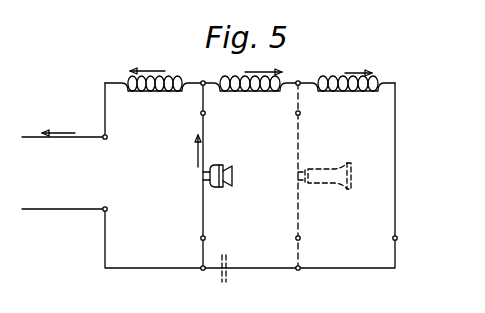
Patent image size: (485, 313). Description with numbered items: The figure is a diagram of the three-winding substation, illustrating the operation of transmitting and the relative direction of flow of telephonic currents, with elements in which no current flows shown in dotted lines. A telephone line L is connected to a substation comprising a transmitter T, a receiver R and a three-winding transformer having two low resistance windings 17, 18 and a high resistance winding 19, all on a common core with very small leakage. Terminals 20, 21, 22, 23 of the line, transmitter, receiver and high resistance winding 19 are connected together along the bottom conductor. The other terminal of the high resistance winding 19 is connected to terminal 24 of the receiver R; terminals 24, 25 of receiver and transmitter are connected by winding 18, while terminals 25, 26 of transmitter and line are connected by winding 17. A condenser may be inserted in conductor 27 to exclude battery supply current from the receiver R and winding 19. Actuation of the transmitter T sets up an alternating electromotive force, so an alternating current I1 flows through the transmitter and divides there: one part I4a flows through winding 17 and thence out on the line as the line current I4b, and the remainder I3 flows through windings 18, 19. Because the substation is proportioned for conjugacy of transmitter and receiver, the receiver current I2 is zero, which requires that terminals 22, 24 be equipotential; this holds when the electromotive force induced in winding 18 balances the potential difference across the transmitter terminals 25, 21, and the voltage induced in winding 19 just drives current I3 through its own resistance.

The low resistance winding 17 is at (154, 95).
The low resistance winding 18 is at (250, 95).
The high resistance winding 19 is at (346, 95).
The line terminal 20 is at (107, 211).
The transmitter terminal 21 is at (206, 238).
The receiver terminal 22 is at (301, 238).
The high resistance winding terminal 23 is at (398, 238).
The receiver terminal 24 is at (300, 115).
The transmitter terminal 25 is at (205, 115).
The line terminal 26 is at (107, 139).
The conductor 27 is at (237, 272).
The transmitter T is at (233, 182).
The receiver R is at (353, 180).
The telephone line L is at (62, 173).
The transmitter current I1 is at (191, 151).
The receiver current I2 is at (263, 63).
The auxiliary resistance current I3 is at (358, 63).
The line current I4a is at (147, 62).
The line current I4b is at (58, 124).